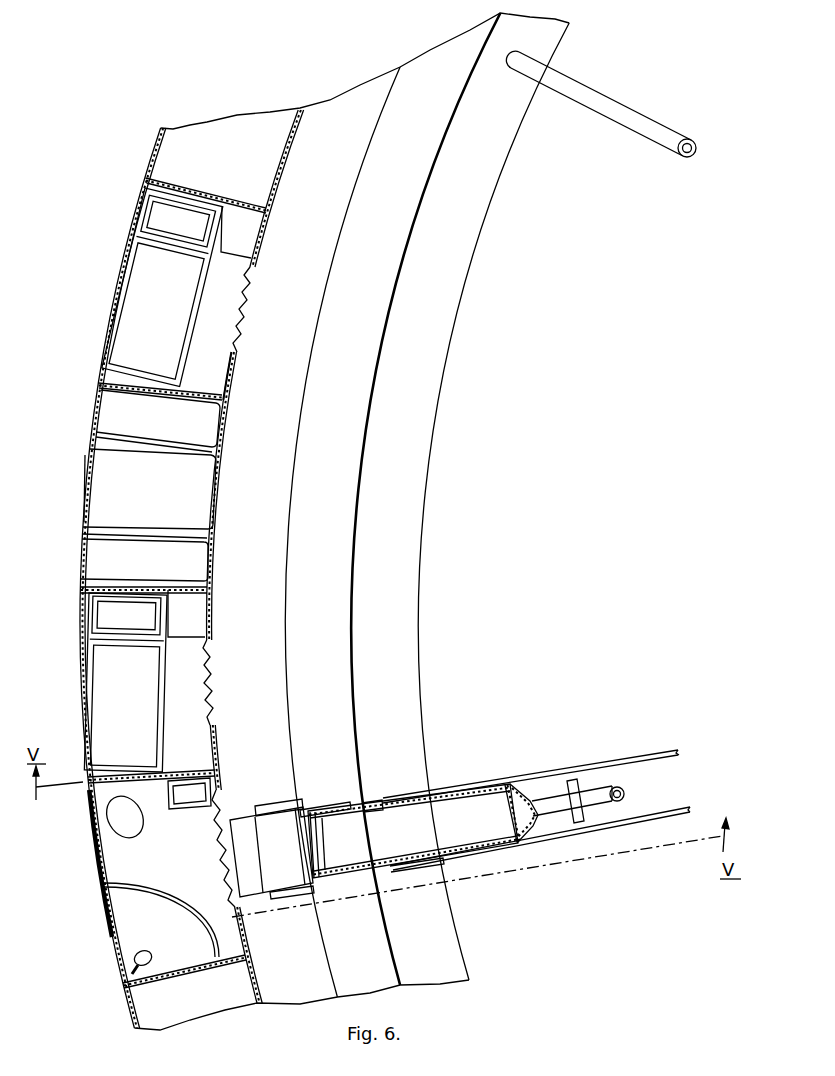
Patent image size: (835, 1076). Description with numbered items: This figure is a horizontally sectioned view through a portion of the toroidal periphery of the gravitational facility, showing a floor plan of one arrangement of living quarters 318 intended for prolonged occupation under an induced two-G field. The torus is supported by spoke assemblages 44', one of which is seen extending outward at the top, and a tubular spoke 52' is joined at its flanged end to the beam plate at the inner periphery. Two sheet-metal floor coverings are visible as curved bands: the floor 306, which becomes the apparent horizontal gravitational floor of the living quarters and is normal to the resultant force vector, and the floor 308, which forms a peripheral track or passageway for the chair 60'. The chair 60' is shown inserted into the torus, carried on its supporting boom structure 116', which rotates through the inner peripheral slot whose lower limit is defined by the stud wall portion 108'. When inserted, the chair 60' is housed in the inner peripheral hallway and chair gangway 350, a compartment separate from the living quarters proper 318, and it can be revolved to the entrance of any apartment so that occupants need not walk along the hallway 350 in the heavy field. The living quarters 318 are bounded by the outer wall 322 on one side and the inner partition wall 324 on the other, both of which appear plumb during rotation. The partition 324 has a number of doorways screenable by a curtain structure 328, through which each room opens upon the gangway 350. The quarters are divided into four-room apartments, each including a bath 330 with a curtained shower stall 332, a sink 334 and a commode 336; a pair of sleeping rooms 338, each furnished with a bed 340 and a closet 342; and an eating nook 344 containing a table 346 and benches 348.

The spoke assemblage 44' is at (539, 460).
The tubular spoke 52' is at (644, 793).
The chair 60' is at (290, 832).
The stud wall portion 108' is at (483, 501).
The supporting boom structure 116' is at (423, 806).
The floor covering 306 is at (287, 377).
The floor 308 is at (350, 710).
The living quarters 318 is at (103, 835).
The outer wall 322 is at (100, 853).
The inner partition wall 324 is at (243, 938).
The curtain structure 328 is at (237, 312).
The bath 330 is at (118, 868).
The curtained shower stall 332 is at (132, 930).
The sink 334 is at (187, 797).
The commode 336 is at (133, 825).
The sleeping room 338 is at (208, 345).
The bed 340 is at (135, 298).
The closet 342 is at (243, 237).
The eating nook 344 is at (215, 500).
The table 346 is at (112, 484).
The bench 348 is at (108, 412).
The hallway and chair gangway 350 is at (255, 570).